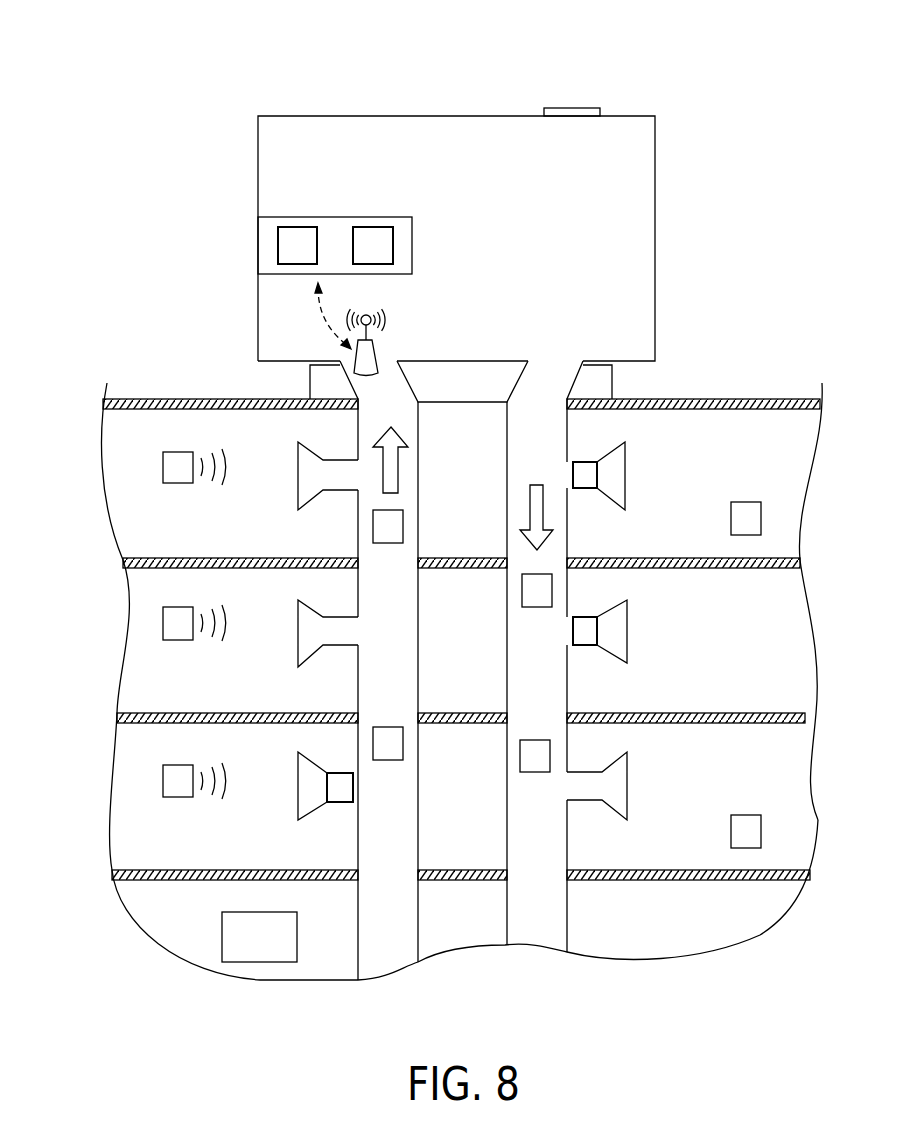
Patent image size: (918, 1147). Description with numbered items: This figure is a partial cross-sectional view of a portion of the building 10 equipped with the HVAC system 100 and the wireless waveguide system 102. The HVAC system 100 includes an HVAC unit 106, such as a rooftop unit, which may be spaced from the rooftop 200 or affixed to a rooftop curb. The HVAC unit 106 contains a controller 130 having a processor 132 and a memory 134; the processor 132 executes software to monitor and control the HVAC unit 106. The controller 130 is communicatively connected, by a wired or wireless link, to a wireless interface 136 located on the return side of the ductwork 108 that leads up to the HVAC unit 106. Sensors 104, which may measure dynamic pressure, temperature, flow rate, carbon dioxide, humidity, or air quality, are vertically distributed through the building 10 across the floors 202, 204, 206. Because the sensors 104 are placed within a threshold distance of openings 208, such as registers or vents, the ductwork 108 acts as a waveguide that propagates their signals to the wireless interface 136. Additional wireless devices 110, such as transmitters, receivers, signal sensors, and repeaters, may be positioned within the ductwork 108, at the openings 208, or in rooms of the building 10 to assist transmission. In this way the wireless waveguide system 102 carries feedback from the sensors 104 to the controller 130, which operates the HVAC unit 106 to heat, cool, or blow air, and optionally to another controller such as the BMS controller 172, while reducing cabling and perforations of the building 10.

The HVAC system 100 is at (658, 60).
The wireless waveguide system 102 is at (175, 291).
The building 10 is at (81, 461).
The HVAC unit 106 is at (457, 116).
The controller 130 is at (258, 247).
The processor 132 is at (297, 227).
The memory 134 is at (373, 227).
The wireless interface 136 is at (376, 355).
The rooftop 200 is at (704, 399).
The floor 206 is at (167, 558).
The floor 204 is at (160, 713).
The floor 202 is at (167, 870).
The sensors 104 is at (178, 483).
The wireless devices 110 is at (388, 543).
The openings 208 is at (298, 474).
The BMS controller 172 is at (258, 962).
The ductwork 108 is at (505, 902).